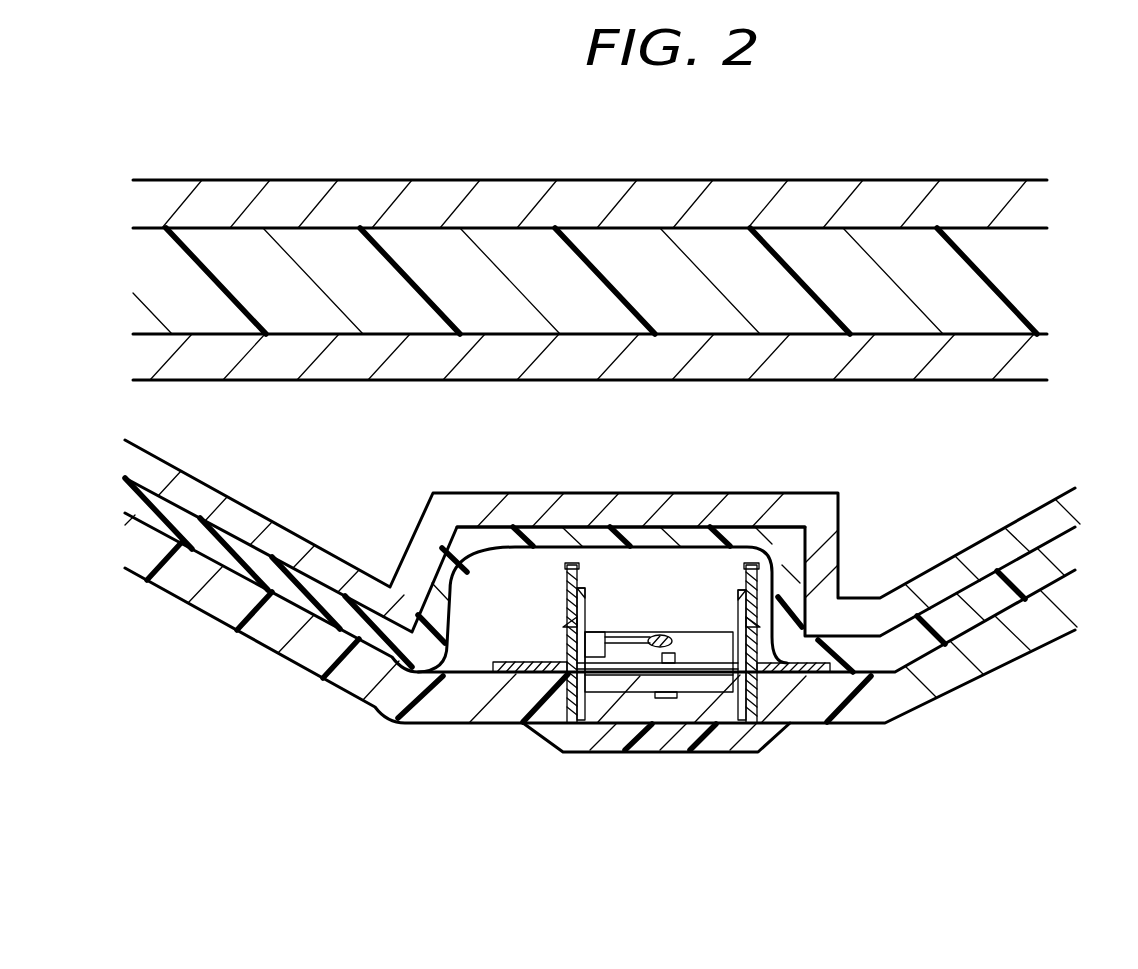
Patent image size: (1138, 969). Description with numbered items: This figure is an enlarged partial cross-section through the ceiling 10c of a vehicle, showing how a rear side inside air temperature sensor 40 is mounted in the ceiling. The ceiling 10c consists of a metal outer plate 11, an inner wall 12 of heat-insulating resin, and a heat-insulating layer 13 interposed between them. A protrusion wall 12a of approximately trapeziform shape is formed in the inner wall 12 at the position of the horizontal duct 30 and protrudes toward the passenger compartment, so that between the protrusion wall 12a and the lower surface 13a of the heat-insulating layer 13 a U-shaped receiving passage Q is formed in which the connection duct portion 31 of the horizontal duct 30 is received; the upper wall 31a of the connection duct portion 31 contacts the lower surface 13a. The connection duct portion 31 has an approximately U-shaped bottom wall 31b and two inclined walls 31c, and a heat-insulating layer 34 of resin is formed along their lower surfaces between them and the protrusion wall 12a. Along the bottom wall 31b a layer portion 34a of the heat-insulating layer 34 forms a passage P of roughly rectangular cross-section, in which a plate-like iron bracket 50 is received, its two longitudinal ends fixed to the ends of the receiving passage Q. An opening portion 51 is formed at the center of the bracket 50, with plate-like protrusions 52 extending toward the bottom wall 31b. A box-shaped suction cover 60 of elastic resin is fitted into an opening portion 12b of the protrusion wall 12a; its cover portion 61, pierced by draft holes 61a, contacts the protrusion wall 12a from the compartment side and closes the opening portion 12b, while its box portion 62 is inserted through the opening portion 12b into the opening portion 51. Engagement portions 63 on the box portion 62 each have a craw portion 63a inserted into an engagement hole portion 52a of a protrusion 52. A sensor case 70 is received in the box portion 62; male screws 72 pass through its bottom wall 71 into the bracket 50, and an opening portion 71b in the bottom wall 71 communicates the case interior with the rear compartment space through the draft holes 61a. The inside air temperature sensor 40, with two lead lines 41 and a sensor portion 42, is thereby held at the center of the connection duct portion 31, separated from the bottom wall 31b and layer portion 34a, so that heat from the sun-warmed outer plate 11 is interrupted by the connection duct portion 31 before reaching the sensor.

The ceiling 10c is at (1078, 210).
The horizontal duct 30 is at (1086, 370).
The outer plate 11 is at (657, 205).
The heat-insulating layer 13 is at (427, 248).
The lower surface 13a is at (833, 337).
The connection duct portion 31 is at (882, 320).
The upper wall 31a is at (570, 357).
The bottom wall 31b is at (737, 512).
The inclined walls 31c is at (258, 527).
The heat-insulating layer 34 is at (988, 607).
The layer portion 34a is at (532, 537).
The inner wall 12 is at (1043, 637).
The protrusion wall 12a is at (890, 705).
The opening portion 12b is at (738, 730).
The inside air temperature sensor 40 is at (737, 518).
The lead lines 41 is at (662, 636).
The sensor portion 42 is at (673, 622).
The bracket 50 is at (523, 653).
The opening portion 51 is at (637, 667).
The protrusions 52 is at (605, 600).
The engagement hole portion 52a is at (635, 608).
The suction cover 60 is at (708, 756).
The cover portion 61 is at (667, 700).
The draft holes 61a is at (577, 740).
The box portion 62 is at (807, 710).
The engagement portions 63 is at (540, 675).
The craw portion 63a is at (560, 618).
The sensor case 70 is at (608, 703).
The bottom wall 71 is at (712, 715).
The opening portion 71b is at (697, 705).
The male screw 72 is at (666, 715).
The passage P is at (473, 635).
The receiving passage Q is at (255, 574).